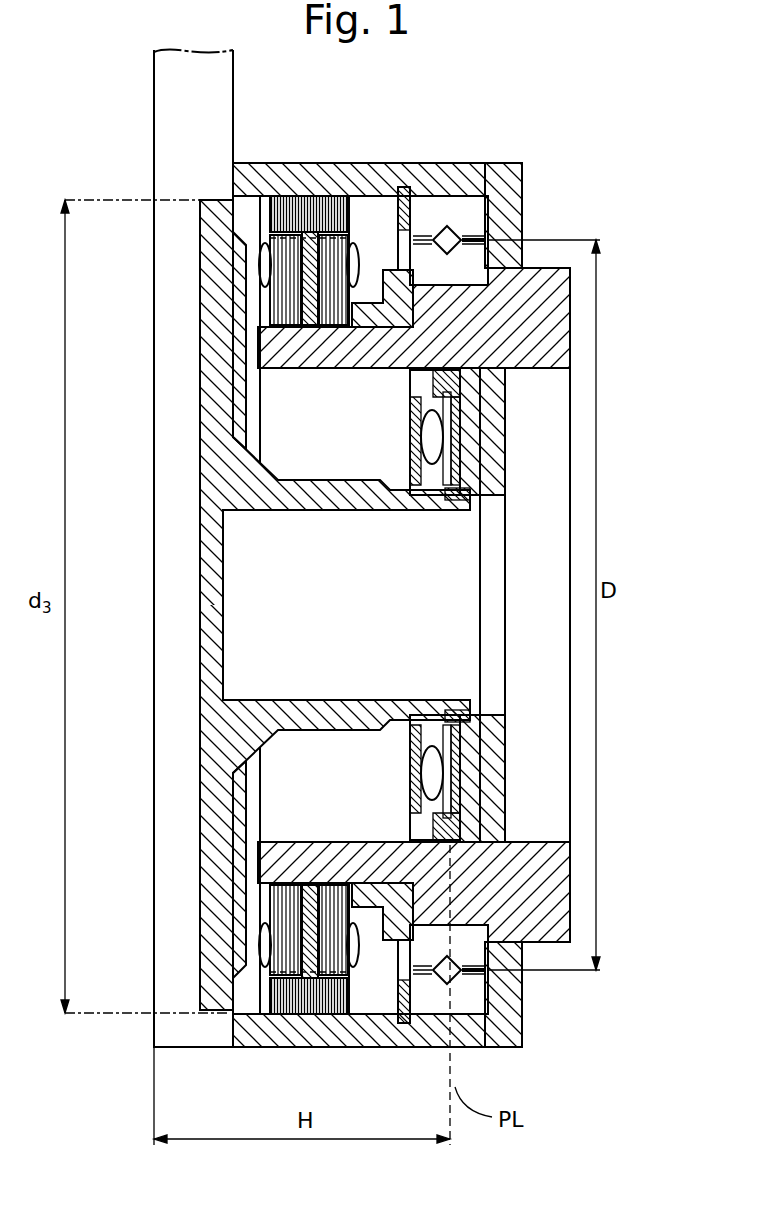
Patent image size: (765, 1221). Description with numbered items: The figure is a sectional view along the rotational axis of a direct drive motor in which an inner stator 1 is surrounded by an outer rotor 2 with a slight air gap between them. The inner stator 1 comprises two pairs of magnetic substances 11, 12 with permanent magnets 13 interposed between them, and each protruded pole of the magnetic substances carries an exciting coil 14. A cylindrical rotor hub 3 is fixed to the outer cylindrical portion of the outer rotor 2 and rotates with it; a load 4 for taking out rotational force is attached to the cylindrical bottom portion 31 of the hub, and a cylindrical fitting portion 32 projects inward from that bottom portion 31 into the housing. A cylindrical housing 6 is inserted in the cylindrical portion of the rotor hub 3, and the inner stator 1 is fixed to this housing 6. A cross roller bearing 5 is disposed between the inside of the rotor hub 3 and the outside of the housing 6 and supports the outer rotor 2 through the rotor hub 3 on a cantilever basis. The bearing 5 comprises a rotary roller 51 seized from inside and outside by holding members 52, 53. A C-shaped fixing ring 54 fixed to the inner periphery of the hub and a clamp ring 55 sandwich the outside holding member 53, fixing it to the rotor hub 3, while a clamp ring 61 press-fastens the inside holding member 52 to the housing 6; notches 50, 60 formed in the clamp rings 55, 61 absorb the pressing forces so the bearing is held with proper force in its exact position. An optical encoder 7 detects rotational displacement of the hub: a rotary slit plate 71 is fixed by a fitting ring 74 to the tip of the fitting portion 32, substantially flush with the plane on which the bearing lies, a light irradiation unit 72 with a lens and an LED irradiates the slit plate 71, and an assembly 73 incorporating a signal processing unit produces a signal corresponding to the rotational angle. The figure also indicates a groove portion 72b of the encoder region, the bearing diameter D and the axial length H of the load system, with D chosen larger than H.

The inner stator 1 is at (117, 220).
The outer rotor 2 is at (305, 1005).
The rotor hub 3 is at (455, 177).
The load 4 is at (168, 122).
The bearing 5 is at (640, 195).
The cylindrical housing 6 is at (558, 345).
The encoder 7 is at (632, 378).
The magnetic substance 11 is at (300, 243).
The magnetic substance 12 is at (330, 260).
The permanent magnet 13 is at (348, 280).
The exciting coil 14 is at (318, 292).
The bottom portion 31 is at (218, 388).
The fitting portion 32 is at (362, 503).
The notch 50 is at (522, 173).
The rotary roller 51 is at (458, 235).
The holding member 52 is at (473, 263).
The holding member 53 is at (473, 215).
The fixing ring 54 is at (404, 186).
The clamp ring 55 is at (512, 180).
The notch 60 is at (425, 293).
The clamp ring 61 is at (360, 997).
The rotary slit plate 71 is at (436, 437).
The light irradiation unit 72 is at (440, 382).
The race groove 72b is at (433, 440).
The assembly 73 is at (448, 442).
The fitting ring 74 is at (460, 494).